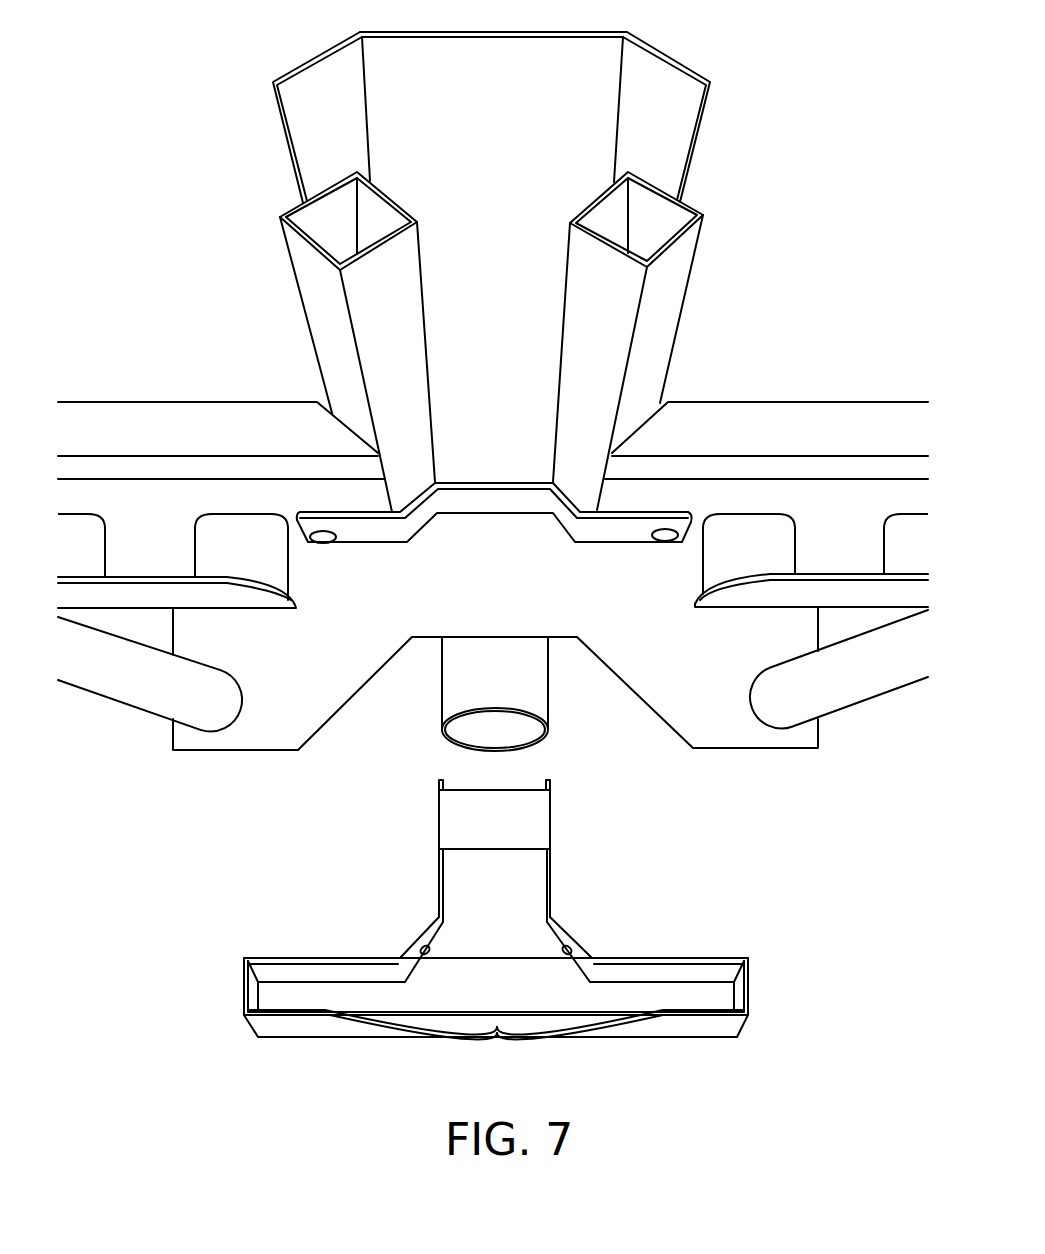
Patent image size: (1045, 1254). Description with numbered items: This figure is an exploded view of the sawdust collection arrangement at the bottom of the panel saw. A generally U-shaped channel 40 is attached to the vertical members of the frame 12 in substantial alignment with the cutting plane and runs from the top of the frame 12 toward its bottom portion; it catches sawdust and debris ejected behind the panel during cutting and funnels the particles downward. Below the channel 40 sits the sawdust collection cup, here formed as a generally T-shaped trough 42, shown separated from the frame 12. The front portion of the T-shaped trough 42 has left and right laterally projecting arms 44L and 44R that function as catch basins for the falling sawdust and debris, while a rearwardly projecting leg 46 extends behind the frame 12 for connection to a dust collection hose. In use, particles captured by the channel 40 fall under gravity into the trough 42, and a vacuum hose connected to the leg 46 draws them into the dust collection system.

The U-shaped channel 40 is at (683, 102).
The frame 12 is at (662, 315).
The T-shaped trough 42 is at (243, 980).
The left laterally projecting arm 44L is at (300, 1030).
The right laterally projecting arm 44R is at (727, 1025).
The rearwardly projecting leg 46 is at (460, 818).